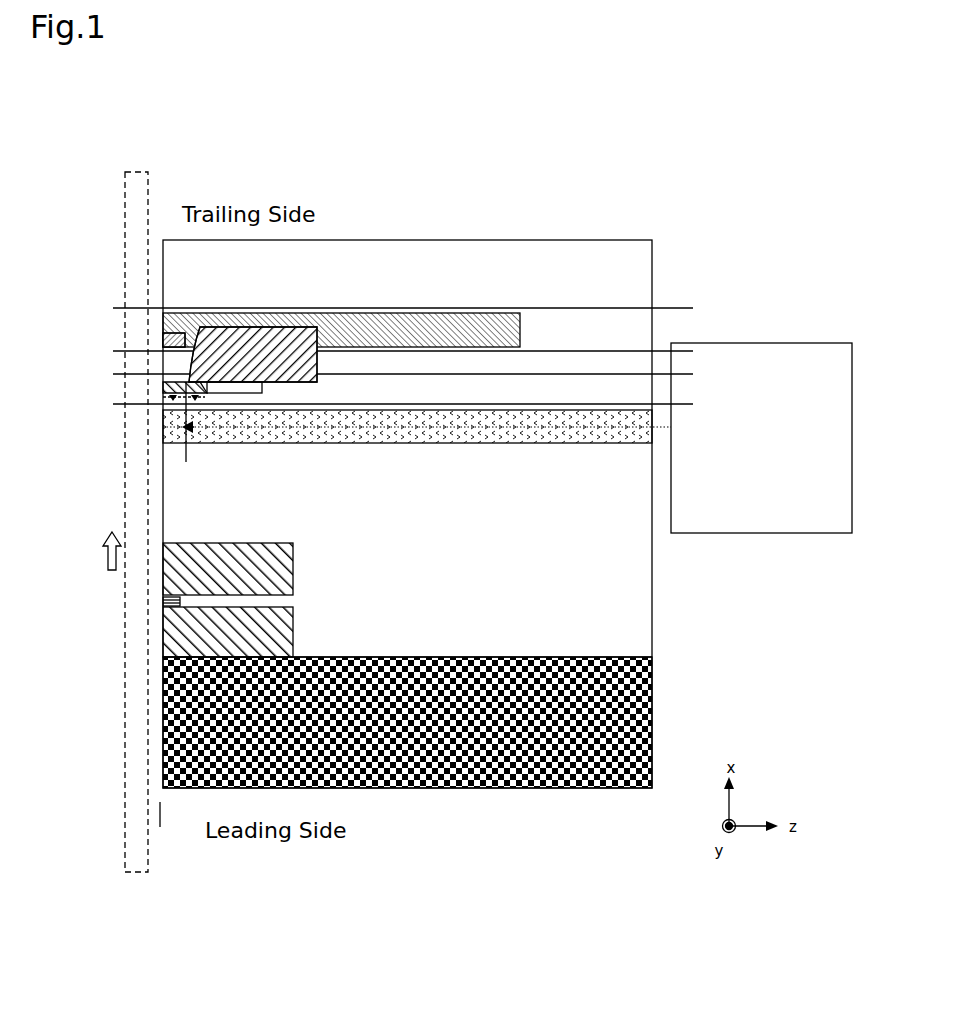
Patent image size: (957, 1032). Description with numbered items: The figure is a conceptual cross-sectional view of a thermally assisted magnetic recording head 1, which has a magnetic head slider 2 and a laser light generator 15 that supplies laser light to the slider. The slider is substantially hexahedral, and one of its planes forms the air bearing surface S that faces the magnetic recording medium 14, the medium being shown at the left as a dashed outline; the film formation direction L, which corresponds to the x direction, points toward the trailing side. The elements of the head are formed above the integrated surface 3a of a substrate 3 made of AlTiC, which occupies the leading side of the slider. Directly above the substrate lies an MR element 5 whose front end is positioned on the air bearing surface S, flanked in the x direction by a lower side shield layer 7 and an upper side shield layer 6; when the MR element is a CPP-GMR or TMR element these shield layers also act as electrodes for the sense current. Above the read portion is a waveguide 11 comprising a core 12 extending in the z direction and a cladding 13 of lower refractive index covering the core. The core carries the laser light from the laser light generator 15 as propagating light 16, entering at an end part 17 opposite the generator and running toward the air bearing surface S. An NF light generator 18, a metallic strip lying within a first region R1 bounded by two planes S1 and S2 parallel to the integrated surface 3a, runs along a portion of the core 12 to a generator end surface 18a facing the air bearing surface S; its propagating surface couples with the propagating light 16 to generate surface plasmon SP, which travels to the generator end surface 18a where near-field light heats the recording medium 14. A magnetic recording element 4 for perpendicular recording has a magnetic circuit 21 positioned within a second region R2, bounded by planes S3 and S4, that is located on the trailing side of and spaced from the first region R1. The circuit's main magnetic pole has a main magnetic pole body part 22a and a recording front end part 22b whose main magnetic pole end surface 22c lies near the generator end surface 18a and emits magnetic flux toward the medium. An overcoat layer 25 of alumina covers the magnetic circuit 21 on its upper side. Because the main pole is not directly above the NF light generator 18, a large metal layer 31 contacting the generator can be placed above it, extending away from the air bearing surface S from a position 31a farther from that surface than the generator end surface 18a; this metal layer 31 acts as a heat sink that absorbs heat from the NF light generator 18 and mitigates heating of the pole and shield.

The thermally assisted magnetic recording head 1 is at (500, 160).
The magnetic head slider 2 is at (404, 216).
The substrate 3 is at (432, 698).
The integrated surface 3a is at (551, 656).
The magnetic recording element 4 is at (106, 293).
The MR element 5 is at (160, 603).
The upper side shield layer 6 is at (295, 575).
The lower side shield layer 7 is at (295, 636).
The waveguide 11 is at (439, 441).
The core 12 is at (336, 444).
The cladding 13 is at (446, 399).
The magnetic recording medium 14 is at (102, 522).
The laser light generator 15 is at (735, 357).
The propagating light 16 is at (275, 432).
The end part 17 is at (653, 432).
The NF light generator 18 is at (169, 374).
The generator end surface 18a is at (163, 389).
The magnetic circuit 21 is at (298, 298).
The main magnetic pole body part 22a is at (463, 312).
The recording front end part 22b is at (198, 327).
The main magnetic pole end surface 22c is at (163, 342).
The overcoat layer 25 is at (303, 288).
The metal layer 31 is at (283, 327).
The position 31a is at (192, 434).
The plane S1 is at (625, 394).
The plane S2 is at (625, 365).
The plane S3 is at (625, 342).
The plane S4 is at (625, 299).
The first region R1 is at (561, 402).
The second region R2 is at (561, 343).
The surface plasmon SP is at (215, 397).
The film formation direction L is at (102, 555).
The air bearing surface S is at (162, 827).